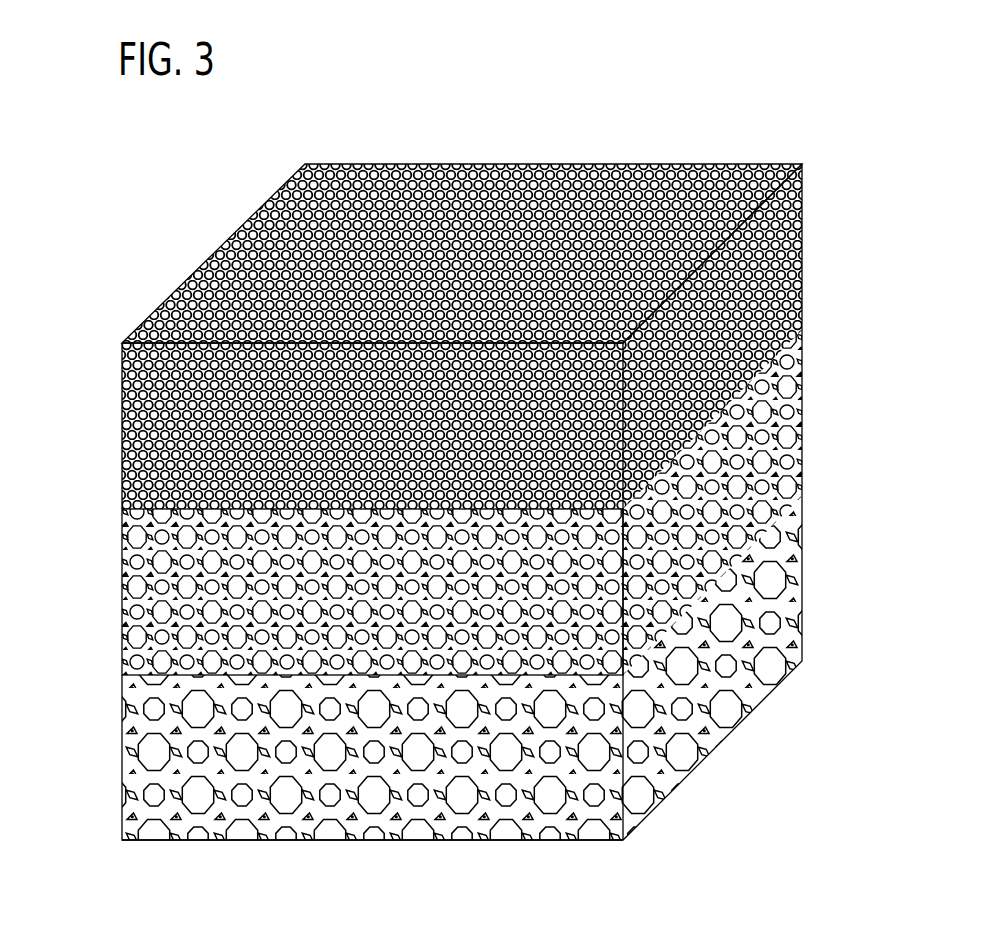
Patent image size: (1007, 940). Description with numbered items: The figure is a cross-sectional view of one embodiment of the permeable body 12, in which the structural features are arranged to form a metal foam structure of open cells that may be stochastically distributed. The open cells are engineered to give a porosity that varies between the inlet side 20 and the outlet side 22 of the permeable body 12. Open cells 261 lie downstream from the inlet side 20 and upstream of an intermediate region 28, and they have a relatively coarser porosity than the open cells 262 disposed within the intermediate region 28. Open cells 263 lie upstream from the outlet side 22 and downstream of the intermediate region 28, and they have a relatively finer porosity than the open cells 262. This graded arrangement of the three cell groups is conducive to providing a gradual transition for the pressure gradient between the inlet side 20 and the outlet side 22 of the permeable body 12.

The permeable body 12 is at (449, 481).
The inlet side 20 is at (377, 849).
The outlet side 22 is at (535, 159).
The open cells 261 is at (785, 592).
The open cells 262 is at (781, 432).
The open cells 263 is at (787, 263).
The intermediate region 28 is at (106, 508).